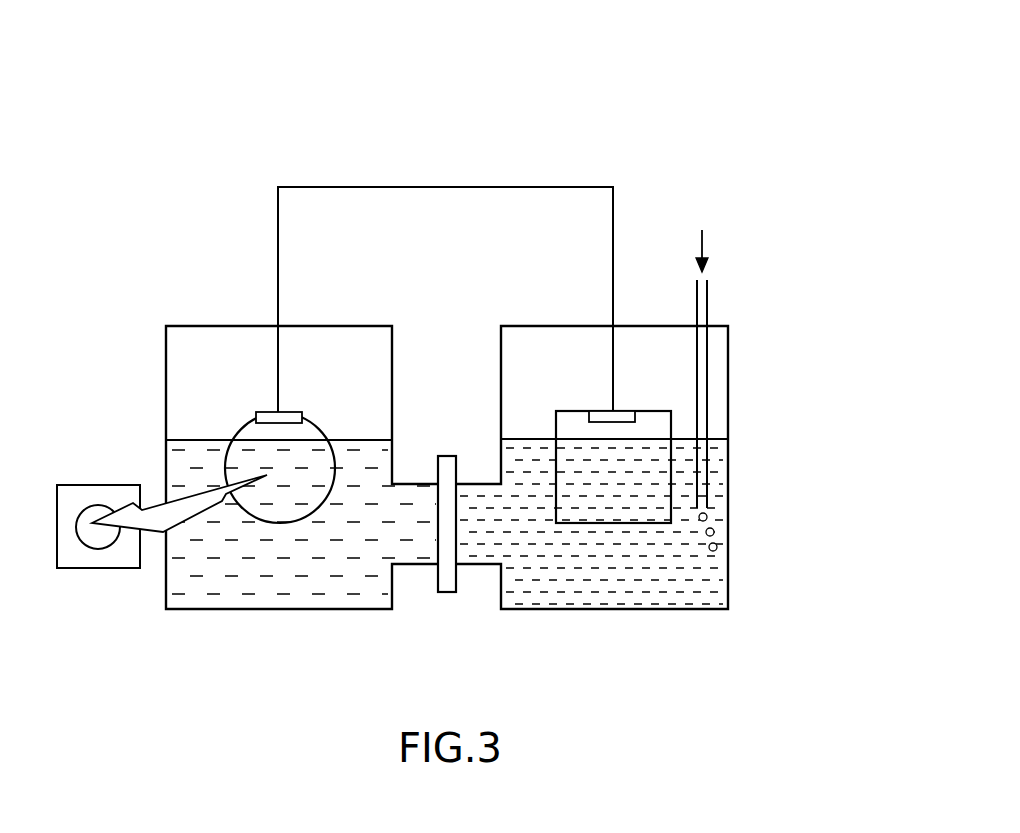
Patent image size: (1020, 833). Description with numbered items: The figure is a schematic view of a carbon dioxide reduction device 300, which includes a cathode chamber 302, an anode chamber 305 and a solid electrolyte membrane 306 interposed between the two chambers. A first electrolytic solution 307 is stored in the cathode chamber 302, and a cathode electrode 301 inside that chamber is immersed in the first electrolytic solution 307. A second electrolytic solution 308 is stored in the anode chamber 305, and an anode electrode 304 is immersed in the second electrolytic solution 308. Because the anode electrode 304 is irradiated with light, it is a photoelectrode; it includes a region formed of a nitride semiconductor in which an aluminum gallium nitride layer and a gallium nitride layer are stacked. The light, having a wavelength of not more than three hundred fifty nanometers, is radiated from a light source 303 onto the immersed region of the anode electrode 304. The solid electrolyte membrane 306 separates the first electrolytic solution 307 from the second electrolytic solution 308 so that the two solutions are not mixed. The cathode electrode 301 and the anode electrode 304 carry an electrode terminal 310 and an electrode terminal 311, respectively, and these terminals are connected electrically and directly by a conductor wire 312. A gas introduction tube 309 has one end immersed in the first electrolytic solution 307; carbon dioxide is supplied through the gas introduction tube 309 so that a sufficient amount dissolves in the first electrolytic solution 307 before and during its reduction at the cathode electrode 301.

The carbon dioxide reduction device 300 is at (612, 127).
The cathode electrode 301 is at (616, 507).
The cathode chamber 302 is at (754, 350).
The light source 303 is at (75, 557).
The anode electrode 304 is at (277, 507).
The anode chamber 305 is at (165, 359).
The solid electrolyte membrane 306 is at (450, 575).
The first electrolytic solution 307 is at (708, 582).
The second electrolytic solution 308 is at (187, 457).
The gas introduction tube 309 is at (709, 303).
The electrode terminal 310 is at (618, 417).
The electrode terminal 311 is at (267, 414).
The conductor wire 312 is at (442, 185).